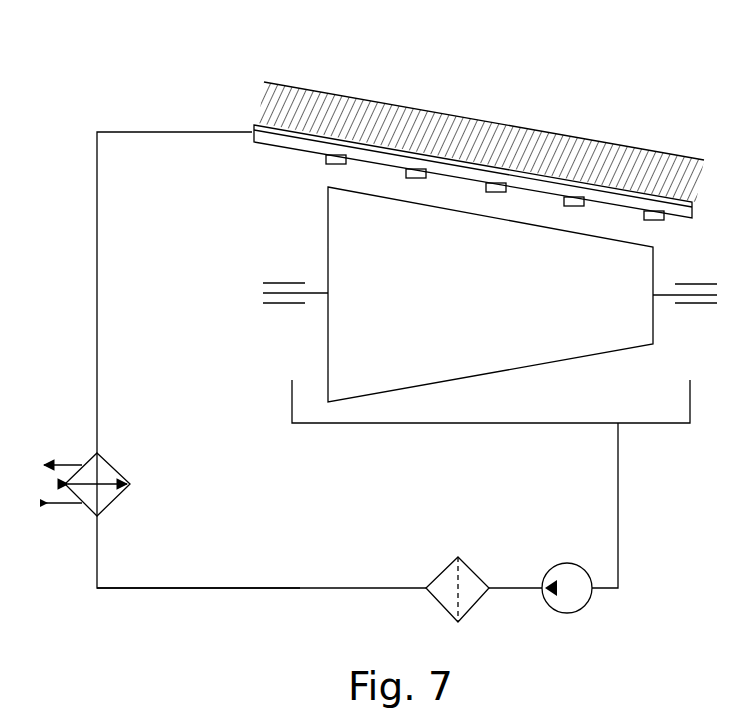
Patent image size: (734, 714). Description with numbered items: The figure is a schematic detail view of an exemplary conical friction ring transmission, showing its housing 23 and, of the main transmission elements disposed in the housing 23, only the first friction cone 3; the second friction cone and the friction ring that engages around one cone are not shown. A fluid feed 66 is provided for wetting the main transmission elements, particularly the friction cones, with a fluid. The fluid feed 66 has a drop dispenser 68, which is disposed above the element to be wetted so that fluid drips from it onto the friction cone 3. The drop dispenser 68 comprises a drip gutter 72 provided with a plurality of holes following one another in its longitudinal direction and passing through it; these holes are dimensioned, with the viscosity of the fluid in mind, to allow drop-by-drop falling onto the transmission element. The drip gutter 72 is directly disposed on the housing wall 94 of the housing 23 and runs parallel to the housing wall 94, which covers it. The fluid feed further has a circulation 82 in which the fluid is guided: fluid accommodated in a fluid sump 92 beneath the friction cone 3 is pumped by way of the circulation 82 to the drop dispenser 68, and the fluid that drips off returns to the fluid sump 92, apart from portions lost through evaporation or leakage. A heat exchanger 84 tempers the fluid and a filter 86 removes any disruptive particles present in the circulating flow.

The first friction cone 3 is at (329, 225).
The housing 23 is at (602, 128).
The fluid feed 66 is at (641, 495).
The drop dispenser 68 is at (250, 123).
The drip gutter 72 is at (677, 214).
The circulation 82 is at (407, 603).
The heat exchanger 84 is at (92, 504).
The filter 86 is at (470, 599).
The fluid sump 92 is at (672, 418).
The housing wall 94 is at (402, 118).